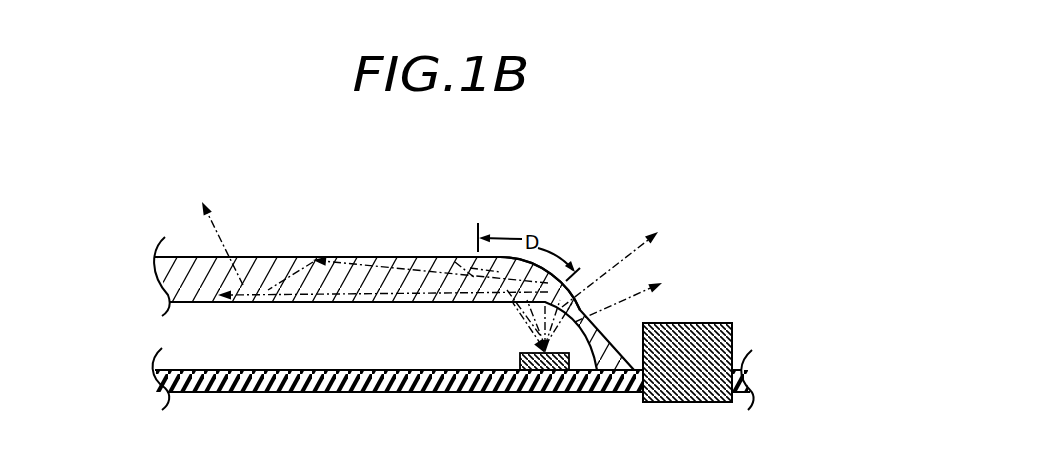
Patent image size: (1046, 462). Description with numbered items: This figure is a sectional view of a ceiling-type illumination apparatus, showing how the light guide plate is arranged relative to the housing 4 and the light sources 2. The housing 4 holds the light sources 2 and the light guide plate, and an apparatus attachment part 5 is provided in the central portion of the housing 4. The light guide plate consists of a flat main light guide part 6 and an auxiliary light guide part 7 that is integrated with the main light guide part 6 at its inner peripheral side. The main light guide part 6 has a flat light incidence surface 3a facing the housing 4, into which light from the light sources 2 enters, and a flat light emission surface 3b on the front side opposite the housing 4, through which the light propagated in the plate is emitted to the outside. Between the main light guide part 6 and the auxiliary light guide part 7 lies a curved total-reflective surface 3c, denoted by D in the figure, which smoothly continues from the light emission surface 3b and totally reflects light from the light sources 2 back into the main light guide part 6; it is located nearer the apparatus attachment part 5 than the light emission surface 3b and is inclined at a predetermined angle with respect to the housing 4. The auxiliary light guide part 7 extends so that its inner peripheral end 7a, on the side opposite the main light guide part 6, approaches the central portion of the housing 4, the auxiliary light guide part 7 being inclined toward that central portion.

The light source 2 is at (538, 371).
The light incidence surface 3a is at (493, 303).
The light emission surface 3b is at (352, 255).
The total-reflective surface 3c is at (500, 258).
The housing 4 is at (377, 392).
The apparatus attachment part 5 is at (688, 372).
The main light guide part 6 is at (278, 273).
The auxiliary light guide part 7 is at (580, 343).
The inner peripheral end 7a is at (612, 368).